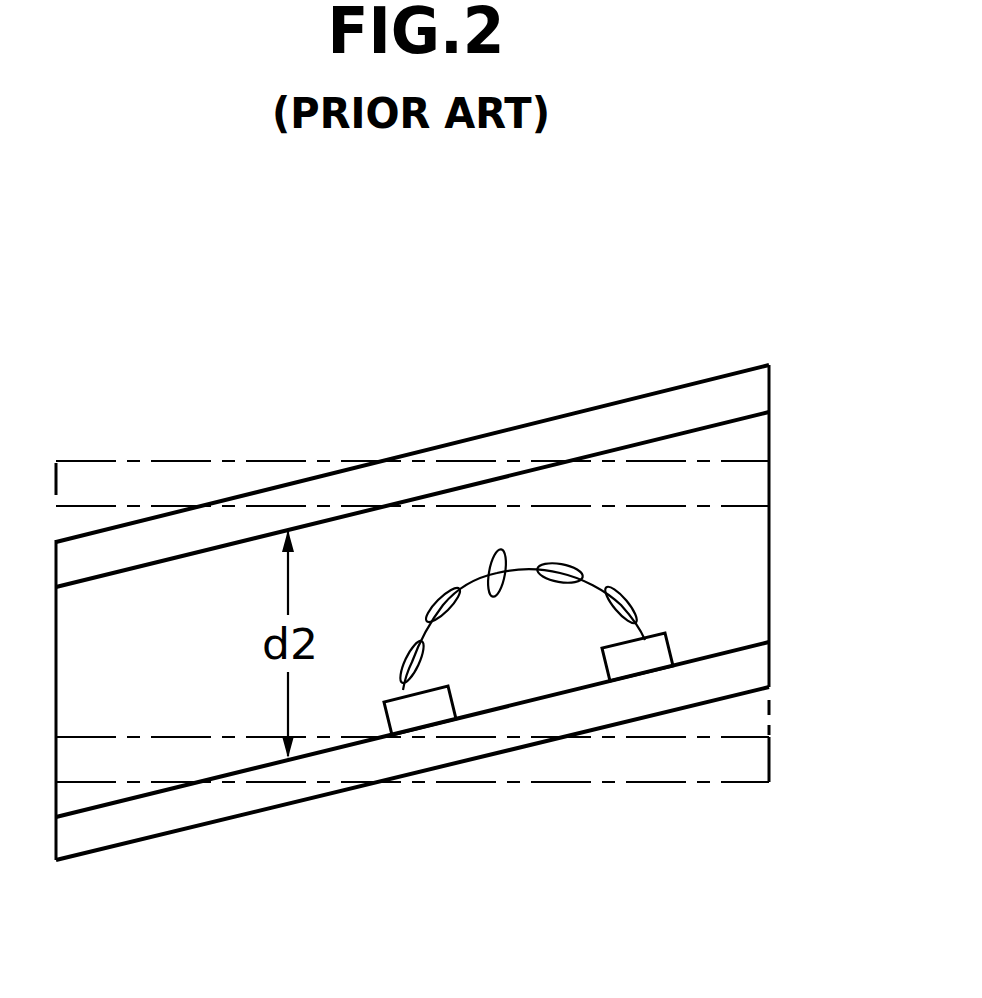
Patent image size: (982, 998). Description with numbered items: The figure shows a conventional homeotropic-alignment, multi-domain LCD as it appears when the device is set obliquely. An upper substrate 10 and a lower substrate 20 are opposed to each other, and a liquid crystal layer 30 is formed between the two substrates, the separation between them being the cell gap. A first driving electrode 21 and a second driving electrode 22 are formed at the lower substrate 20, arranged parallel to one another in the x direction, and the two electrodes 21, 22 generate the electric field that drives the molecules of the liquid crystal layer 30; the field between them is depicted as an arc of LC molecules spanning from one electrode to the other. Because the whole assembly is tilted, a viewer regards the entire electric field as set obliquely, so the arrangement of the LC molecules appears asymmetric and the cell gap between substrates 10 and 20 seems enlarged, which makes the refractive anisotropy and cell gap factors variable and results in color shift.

The upper substrate 10 is at (755, 392).
The lower substrate 20 is at (755, 668).
The liquid crystal layer 30 is at (755, 531).
The first driving electrode 21 is at (425, 713).
The second driving electrode 22 is at (637, 660).